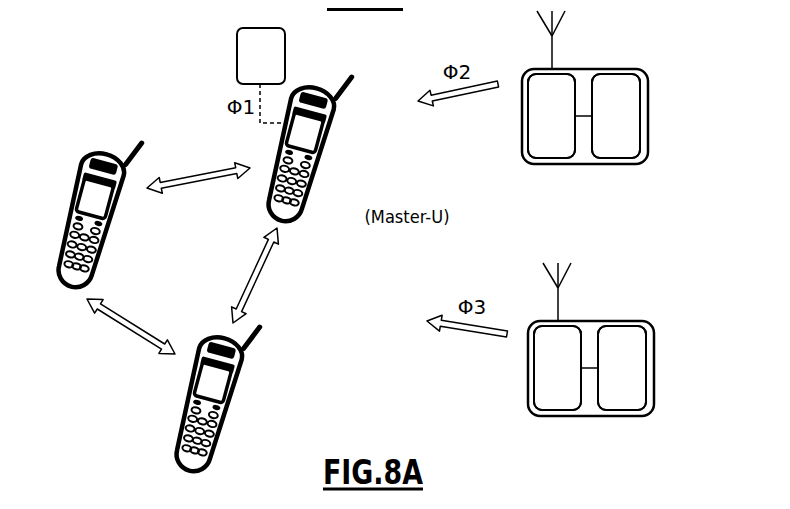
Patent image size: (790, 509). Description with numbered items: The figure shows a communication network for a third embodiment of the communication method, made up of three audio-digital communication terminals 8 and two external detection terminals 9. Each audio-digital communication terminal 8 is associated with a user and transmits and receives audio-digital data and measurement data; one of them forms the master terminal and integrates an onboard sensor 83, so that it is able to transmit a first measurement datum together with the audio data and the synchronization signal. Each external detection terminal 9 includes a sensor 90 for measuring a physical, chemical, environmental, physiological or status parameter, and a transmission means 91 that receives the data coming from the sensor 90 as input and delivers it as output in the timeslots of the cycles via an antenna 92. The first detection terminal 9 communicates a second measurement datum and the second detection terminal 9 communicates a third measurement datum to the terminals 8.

The audio-digital communication terminal 8 is at (126, 208).
The onboard sensor 83 is at (249, 66).
The external detection terminal 9 is at (610, 220).
The sensor 90 is at (603, 126).
The transmission means 91 is at (538, 126).
The antenna 92 is at (553, 48).